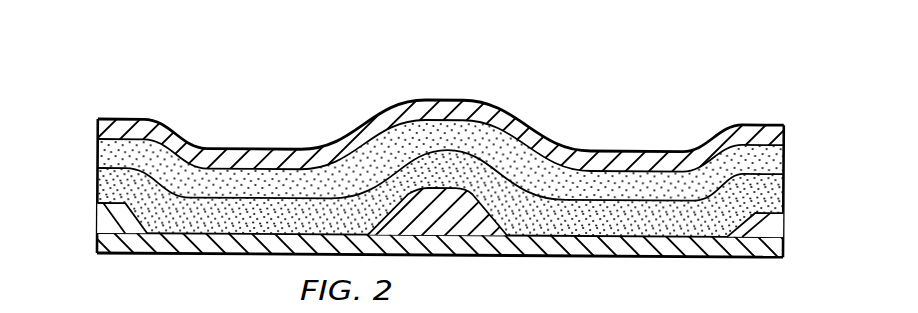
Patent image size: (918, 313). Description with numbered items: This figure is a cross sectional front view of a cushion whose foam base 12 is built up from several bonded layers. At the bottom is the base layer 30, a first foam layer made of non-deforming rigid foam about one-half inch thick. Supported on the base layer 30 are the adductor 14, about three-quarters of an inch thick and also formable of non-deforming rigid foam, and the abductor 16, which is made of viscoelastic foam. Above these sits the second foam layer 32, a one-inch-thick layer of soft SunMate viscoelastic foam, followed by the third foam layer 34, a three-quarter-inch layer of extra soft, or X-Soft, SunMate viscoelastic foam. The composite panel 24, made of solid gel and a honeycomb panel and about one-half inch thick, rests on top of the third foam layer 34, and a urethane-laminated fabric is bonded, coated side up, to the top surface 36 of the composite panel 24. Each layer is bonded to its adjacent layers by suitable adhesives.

The foam base 12 is at (800, 145).
The adductor 14 is at (97, 215).
The abductor 16 is at (472, 223).
The composite panel 24 is at (97, 120).
The base layer 30 is at (97, 240).
The second foam layer 32 is at (97, 186).
The third foam layer 34 is at (97, 152).
The top surface 36 is at (641, 150).